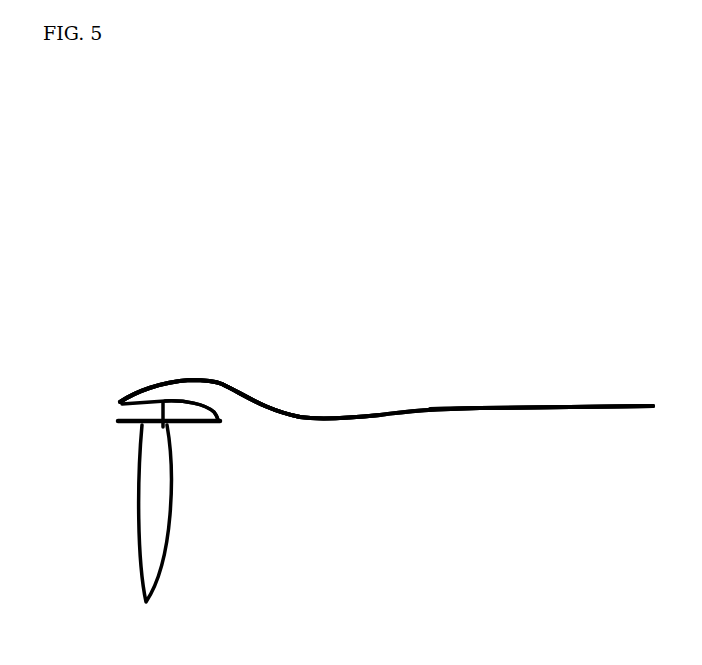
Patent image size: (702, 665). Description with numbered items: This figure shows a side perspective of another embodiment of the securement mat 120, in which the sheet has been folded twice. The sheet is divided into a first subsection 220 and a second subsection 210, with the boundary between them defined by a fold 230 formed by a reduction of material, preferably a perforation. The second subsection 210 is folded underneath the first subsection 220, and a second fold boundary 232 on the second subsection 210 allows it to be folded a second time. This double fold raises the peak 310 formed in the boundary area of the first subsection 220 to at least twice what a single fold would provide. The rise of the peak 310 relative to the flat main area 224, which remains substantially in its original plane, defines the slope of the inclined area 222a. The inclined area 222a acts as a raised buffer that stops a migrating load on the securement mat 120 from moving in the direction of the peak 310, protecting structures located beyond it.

The securement mat 120 is at (528, 500).
The second subsection 210 is at (146, 536).
The first subsection 220 is at (640, 256).
The inclined area 222a is at (321, 397).
The main area 224 is at (532, 412).
The fold 230 is at (104, 408).
The second fold boundary 232 is at (240, 429).
The peak 310 is at (210, 377).